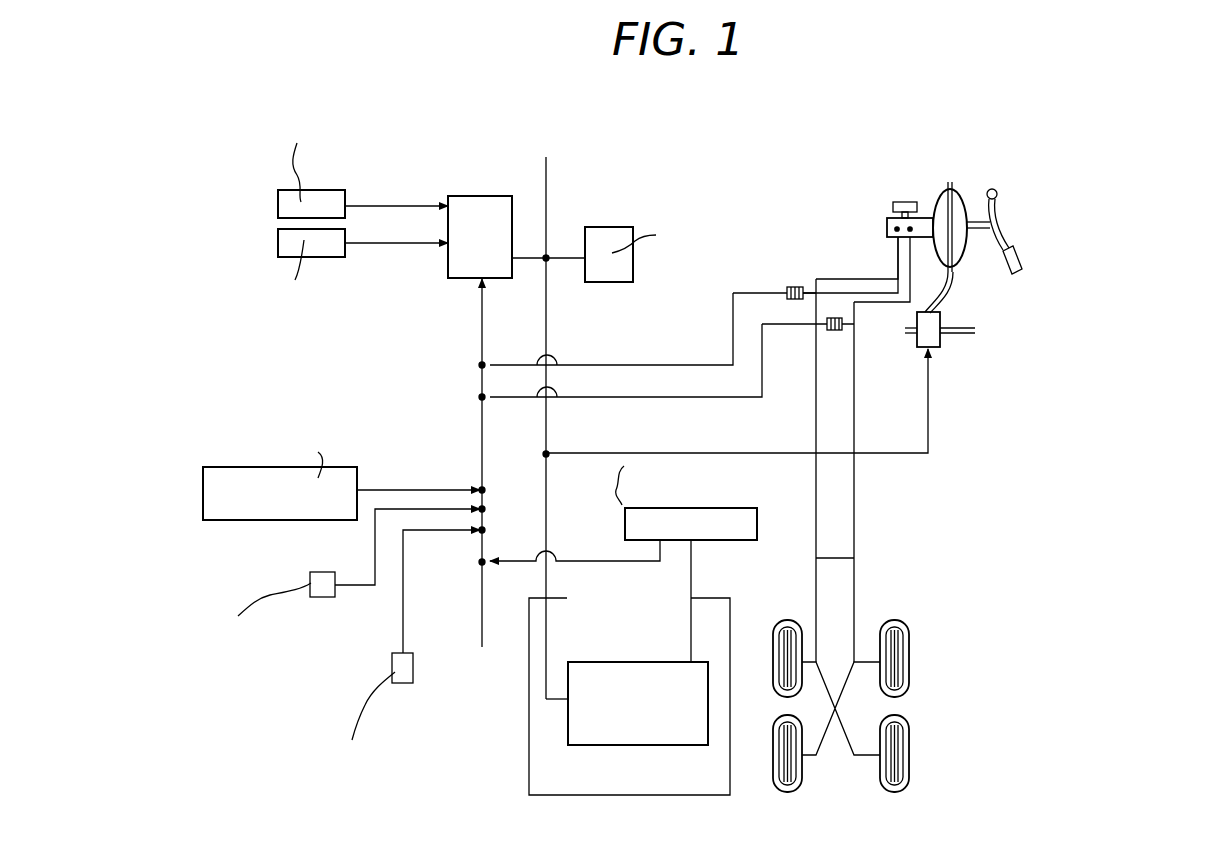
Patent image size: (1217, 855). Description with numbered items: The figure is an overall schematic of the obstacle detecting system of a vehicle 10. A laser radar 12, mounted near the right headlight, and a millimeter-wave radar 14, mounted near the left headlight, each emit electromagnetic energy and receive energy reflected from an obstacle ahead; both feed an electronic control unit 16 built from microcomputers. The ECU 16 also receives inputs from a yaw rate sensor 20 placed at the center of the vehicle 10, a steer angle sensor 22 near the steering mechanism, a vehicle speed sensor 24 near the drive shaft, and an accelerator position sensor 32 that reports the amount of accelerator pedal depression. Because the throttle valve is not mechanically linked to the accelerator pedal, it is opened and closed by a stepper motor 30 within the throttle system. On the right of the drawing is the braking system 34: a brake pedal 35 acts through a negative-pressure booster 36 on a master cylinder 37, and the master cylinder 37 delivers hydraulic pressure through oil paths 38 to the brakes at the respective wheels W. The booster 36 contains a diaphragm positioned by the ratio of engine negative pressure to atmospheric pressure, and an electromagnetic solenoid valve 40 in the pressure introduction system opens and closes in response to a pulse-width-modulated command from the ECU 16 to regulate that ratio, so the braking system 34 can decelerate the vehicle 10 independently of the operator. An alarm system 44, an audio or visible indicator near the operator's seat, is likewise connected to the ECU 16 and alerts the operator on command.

The vehicle 10 is at (696, 186).
The laser radar 12 is at (278, 205).
The millimeter-wave radar 14 is at (278, 249).
The electronic control unit 16 is at (482, 196).
The yaw rate sensor 20 is at (220, 520).
The steer angle sensor 22 is at (321, 597).
The vehicle speed sensor 24 is at (401, 684).
The stepper motor 30 is at (608, 745).
The accelerator position sensor 32 is at (625, 527).
The braking system 34 is at (1030, 223).
The brake pedal 35 is at (997, 210).
The negative-pressure booster 36 is at (950, 184).
The master cylinder 37 is at (887, 228).
The oil paths 38 is at (857, 558).
The electromagnetic solenoid valve 40 is at (937, 349).
The alarm system 44 is at (609, 227).
The wheels W is at (773, 665).